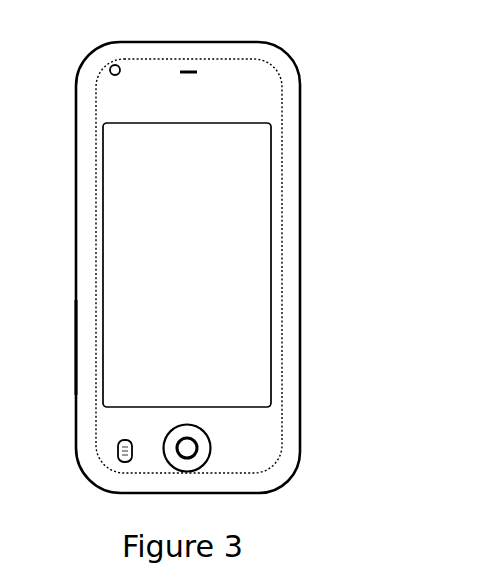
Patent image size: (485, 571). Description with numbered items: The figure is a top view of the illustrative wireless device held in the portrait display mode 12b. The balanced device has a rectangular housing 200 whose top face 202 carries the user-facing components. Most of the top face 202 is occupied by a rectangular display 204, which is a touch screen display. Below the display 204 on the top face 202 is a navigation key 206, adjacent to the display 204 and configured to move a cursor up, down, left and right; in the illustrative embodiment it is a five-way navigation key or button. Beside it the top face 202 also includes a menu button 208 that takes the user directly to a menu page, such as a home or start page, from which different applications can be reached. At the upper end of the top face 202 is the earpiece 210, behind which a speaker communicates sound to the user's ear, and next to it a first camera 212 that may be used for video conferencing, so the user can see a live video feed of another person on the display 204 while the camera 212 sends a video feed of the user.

The portrait display mode 12b is at (300, 257).
The rectangular housing 200 is at (295, 140).
The top face 202 is at (232, 98).
The rectangular display 204 is at (122, 250).
The navigation key 206 is at (192, 427).
The menu button 208 is at (126, 438).
The earpiece 210 is at (192, 70).
The first camera 212 is at (118, 66).